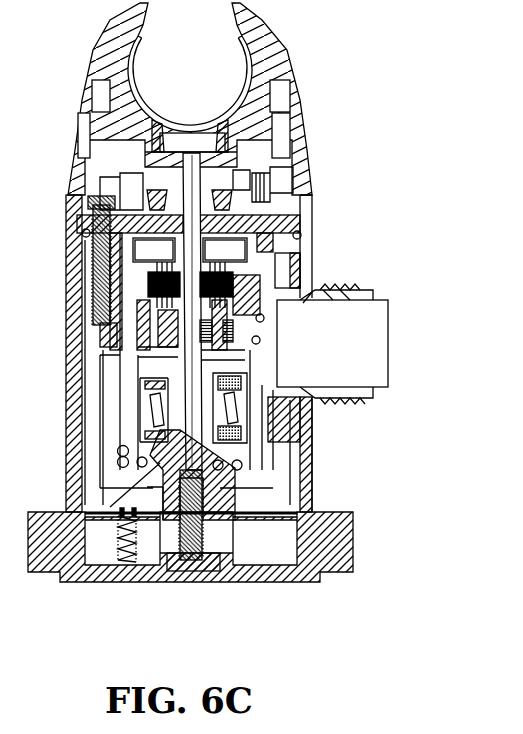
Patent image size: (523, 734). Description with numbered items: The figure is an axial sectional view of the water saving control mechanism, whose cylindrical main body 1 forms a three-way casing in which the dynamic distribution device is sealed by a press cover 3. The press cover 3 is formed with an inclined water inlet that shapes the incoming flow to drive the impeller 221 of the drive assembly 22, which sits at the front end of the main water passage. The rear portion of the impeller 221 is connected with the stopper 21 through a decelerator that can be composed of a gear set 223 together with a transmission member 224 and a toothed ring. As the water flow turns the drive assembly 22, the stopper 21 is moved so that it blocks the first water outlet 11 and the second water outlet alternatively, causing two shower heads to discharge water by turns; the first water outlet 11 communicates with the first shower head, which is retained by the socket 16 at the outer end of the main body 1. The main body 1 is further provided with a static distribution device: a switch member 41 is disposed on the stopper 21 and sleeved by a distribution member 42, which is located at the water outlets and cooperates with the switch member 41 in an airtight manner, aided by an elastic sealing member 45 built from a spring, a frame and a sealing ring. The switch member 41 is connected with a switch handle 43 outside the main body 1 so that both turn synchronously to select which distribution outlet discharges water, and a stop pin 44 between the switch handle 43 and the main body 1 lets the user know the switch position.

The main body 1 is at (70, 436).
The press cover 3 is at (85, 233).
The first water outlet 11 is at (386, 346).
The socket 16 is at (234, 52).
The stopper 21 is at (140, 360).
The drive assembly 22 is at (403, 217).
The impeller 221 is at (300, 235).
The gear set 223 is at (240, 268).
The transmission member 224 is at (250, 287).
The switch member 41 is at (148, 380).
The distribution member 42 is at (117, 455).
The switch handle 43 is at (145, 578).
The stop pin 44 is at (123, 570).
The elastic sealing member 45 is at (250, 437).